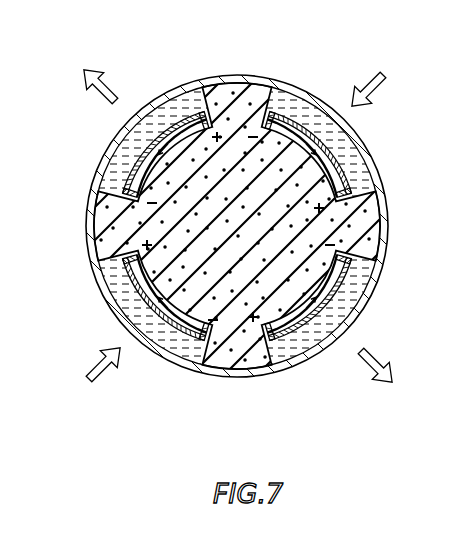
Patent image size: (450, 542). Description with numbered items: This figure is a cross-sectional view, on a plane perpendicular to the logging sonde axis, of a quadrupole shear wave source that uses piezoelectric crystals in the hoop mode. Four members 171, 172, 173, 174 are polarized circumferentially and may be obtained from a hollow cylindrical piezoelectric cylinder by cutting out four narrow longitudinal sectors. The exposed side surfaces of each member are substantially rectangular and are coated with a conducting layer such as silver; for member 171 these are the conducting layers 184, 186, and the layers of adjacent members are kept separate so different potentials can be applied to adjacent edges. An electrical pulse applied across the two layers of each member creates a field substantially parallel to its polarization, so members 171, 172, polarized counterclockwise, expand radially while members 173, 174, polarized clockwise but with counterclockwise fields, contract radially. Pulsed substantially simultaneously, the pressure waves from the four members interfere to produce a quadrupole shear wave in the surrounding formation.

The member 171 is at (182, 117).
The member 172 is at (344, 277).
The member 173 is at (192, 338).
The member 174 is at (342, 176).
The conducting layer 184 is at (98, 214).
The conducting layer 186 is at (213, 108).